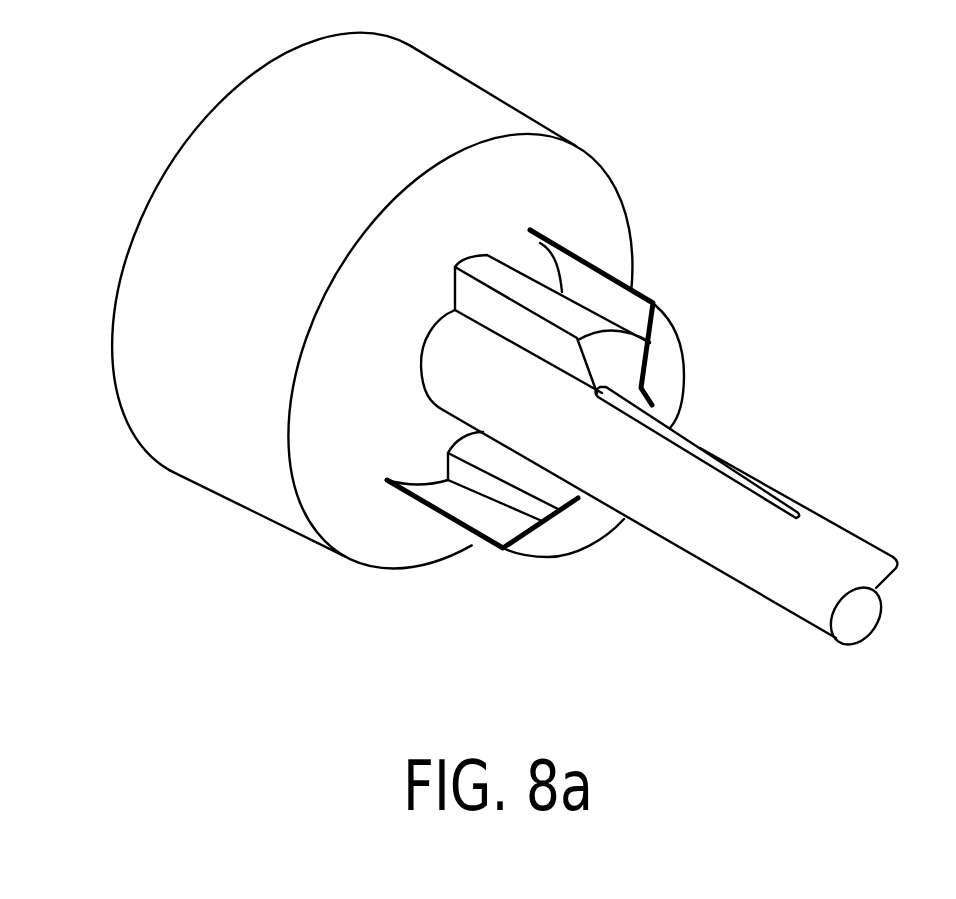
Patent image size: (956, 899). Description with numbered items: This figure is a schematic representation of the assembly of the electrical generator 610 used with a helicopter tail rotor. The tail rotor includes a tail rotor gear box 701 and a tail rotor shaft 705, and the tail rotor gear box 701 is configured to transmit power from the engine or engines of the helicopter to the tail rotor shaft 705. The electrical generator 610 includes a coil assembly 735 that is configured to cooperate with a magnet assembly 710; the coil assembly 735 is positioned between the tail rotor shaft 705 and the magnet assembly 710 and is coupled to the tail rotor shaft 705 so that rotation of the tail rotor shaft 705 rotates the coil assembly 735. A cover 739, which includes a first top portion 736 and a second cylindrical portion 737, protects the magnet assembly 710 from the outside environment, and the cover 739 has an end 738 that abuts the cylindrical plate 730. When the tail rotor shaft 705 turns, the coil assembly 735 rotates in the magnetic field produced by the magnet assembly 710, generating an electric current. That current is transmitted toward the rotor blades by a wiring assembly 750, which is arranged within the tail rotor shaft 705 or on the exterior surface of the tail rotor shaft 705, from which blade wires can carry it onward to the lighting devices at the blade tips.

The electrical generator 610 is at (768, 281).
The tail rotor gear box 701 is at (197, 313).
The tail rotor shaft 705 is at (686, 552).
The magnet assembly 710 is at (541, 243).
The cylindrical plate 730 is at (580, 180).
The coil assembly 735 is at (520, 327).
The first top portion 736 is at (673, 360).
The second cylindrical portion 737 is at (455, 520).
The end 738 is at (392, 481).
The cover 739 is at (668, 318).
The wiring assembly 750 is at (703, 450).